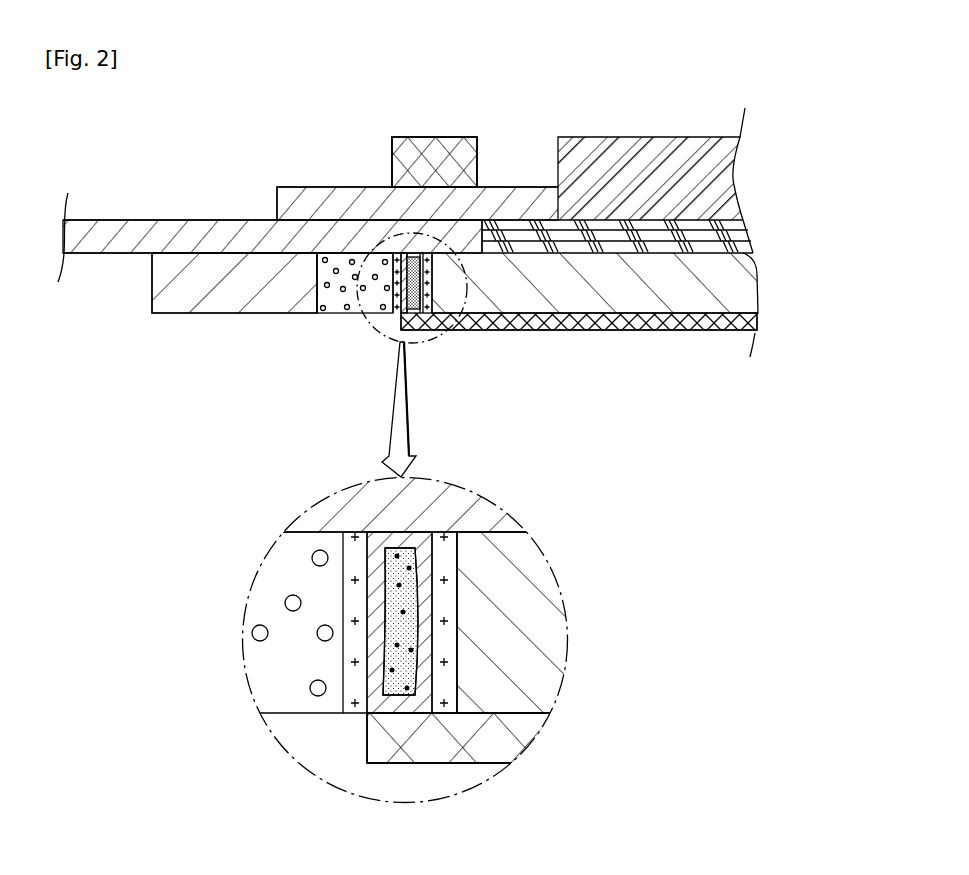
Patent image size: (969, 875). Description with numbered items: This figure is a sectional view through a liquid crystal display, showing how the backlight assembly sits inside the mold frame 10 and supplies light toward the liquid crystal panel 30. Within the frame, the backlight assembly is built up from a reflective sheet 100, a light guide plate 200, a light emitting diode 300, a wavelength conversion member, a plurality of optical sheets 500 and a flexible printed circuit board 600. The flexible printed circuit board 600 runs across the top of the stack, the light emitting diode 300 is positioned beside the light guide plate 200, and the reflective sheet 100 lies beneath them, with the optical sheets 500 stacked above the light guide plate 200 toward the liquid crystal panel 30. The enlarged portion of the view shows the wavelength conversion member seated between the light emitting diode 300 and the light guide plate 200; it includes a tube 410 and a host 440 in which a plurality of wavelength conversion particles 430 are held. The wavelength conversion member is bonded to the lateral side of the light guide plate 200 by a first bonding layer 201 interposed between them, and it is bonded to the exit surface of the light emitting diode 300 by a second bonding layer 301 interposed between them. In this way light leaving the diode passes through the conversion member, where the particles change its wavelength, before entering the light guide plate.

The mold frame 10 is at (196, 297).
The liquid crystal panel 30 is at (648, 152).
The reflective sheet 100 is at (493, 320).
The light guide plate 200 is at (575, 300).
The first bonding layer 201 is at (447, 673).
The light emitting diode 300 is at (338, 300).
The second bonding layer 301 is at (352, 703).
The tube 410 is at (400, 705).
The wavelength conversion particles 430 is at (428, 538).
The host 440 is at (393, 597).
The optical sheets 500 is at (650, 242).
The flexible printed circuit board 600 is at (200, 233).